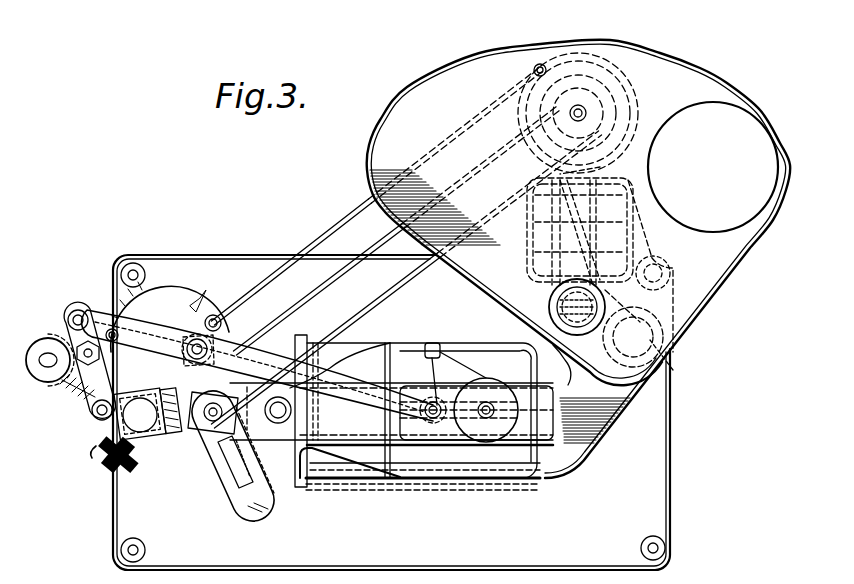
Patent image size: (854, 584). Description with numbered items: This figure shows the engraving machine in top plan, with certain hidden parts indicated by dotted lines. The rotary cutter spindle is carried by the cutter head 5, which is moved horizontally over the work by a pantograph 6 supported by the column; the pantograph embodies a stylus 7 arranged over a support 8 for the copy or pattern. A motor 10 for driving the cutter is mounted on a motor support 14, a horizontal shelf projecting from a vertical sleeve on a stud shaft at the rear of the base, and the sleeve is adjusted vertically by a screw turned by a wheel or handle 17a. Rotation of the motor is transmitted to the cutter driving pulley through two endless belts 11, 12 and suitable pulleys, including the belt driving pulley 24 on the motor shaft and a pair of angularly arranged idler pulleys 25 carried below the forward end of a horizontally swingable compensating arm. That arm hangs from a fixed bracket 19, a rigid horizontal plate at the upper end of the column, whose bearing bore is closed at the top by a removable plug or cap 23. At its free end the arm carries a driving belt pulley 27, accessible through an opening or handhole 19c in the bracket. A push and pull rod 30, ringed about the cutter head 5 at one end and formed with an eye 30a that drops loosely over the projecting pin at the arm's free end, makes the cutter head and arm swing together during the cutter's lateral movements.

The cutter head 5 is at (138, 455).
The pantograph 6 is at (203, 303).
The stylus 7 is at (427, 360).
The support 8 is at (484, 423).
The motor 10 is at (640, 237).
The endless belt 11 is at (600, 167).
The endless belt 12 is at (327, 317).
The motor support 14 is at (655, 292).
The wheel or handle 17a is at (673, 370).
The fixed bracket 19 is at (708, 277).
The opening or handhole 19c is at (746, 160).
The removable plug or cap 23 is at (568, 352).
The belt driving pulley 24 is at (548, 296).
The idler pulleys 25 is at (556, 278).
The driving belt pulley 27 is at (613, 90).
The push and pull rod 30 is at (372, 258).
The eye 30a is at (585, 105).